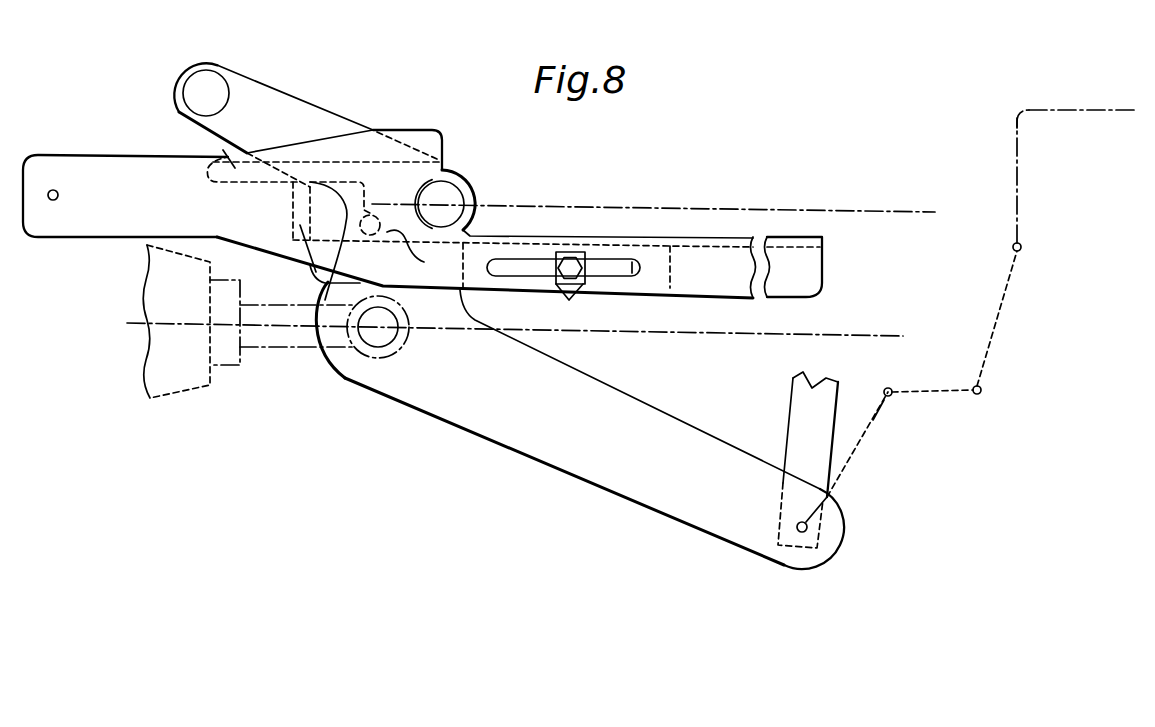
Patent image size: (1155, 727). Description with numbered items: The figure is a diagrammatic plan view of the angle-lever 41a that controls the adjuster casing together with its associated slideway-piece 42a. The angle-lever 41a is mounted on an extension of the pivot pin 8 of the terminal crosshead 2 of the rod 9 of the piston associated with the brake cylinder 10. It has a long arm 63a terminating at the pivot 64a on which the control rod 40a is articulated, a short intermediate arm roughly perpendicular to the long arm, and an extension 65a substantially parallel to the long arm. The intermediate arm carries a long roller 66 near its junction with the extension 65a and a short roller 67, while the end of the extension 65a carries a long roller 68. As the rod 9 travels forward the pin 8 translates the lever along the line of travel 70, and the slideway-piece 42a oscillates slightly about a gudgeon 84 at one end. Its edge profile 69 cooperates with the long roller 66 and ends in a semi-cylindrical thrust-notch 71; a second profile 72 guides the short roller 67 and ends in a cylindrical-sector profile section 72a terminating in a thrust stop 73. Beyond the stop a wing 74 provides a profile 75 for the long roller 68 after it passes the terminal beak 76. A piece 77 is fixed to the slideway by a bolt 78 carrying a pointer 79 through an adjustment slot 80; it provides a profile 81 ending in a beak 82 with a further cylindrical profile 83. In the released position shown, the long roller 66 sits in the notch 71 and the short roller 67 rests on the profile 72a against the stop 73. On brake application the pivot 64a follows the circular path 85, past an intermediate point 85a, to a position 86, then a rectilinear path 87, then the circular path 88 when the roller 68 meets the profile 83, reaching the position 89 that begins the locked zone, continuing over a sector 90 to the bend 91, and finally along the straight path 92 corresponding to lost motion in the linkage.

The terminal crosshead 2 is at (357, 353).
The pivot pin 8 is at (382, 338).
The rod 9 is at (300, 337).
The brake cylinder 10 is at (187, 377).
The control rod 40a is at (796, 400).
The angle-lever 41a is at (593, 542).
The slideway-piece 42a is at (502, 238).
The long arm 63a is at (513, 435).
The pivot 64a is at (807, 525).
The extension 65a is at (283, 108).
The long roller 66 is at (453, 193).
The short roller 67 is at (370, 235).
The long roller 68 is at (208, 85).
The profile 69 is at (613, 230).
The line of travel 70 is at (547, 330).
The thrust-notch 71 is at (437, 175).
The second profile 72 is at (713, 248).
The profile section 72a is at (425, 256).
The thrust stop 73 is at (375, 208).
The wing 74 is at (230, 157).
The profile 75 is at (253, 180).
The terminal beak 76 is at (210, 177).
The piece 77 is at (658, 253).
The bolt 78 is at (573, 270).
The pointer 79 is at (569, 300).
The adjustment slot 80 is at (633, 273).
The profile 81 is at (492, 287).
The beak 82 is at (297, 230).
The cylindrical profile 83 is at (293, 217).
The gudgeon 84 is at (58, 192).
The circular path 85 is at (857, 452).
The intermediate point 85a is at (873, 423).
The position 86 is at (890, 394).
The rectilinear path 87 is at (947, 391).
The circular path 88 is at (1008, 308).
The position 89 is at (1020, 245).
The sector 90 is at (1018, 157).
The bend 91 is at (1020, 110).
The straight path 92 is at (1098, 110).